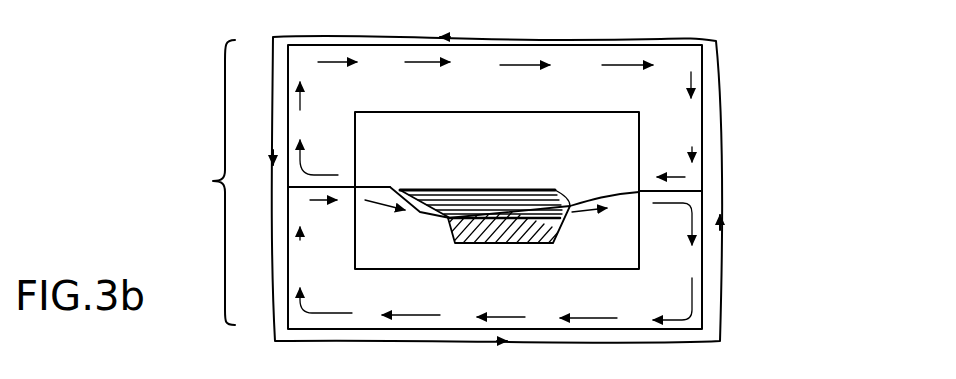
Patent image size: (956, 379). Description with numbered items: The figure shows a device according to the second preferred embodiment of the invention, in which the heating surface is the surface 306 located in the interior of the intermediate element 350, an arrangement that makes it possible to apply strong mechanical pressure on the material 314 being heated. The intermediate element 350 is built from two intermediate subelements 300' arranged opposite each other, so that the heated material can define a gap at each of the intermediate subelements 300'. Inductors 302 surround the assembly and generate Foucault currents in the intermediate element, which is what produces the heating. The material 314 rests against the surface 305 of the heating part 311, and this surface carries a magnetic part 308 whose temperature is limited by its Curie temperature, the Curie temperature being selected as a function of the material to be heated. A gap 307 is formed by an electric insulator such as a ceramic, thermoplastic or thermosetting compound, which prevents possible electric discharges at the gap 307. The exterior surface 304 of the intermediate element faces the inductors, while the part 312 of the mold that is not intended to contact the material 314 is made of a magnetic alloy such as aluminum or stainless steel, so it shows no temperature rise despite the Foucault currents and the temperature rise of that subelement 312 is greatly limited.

The intermediate subelement 300' is at (534, 178).
The inductor 302 is at (348, 9).
The exterior surface 304 is at (567, 42).
The surface of the heating part 305 is at (572, 205).
The heating surface 306 is at (388, 186).
The gap 307 is at (702, 190).
The magnetic part 308 is at (446, 236).
The heating part 311 is at (623, 261).
The part of the mold not in contact with the material 312 is at (703, 110).
The material to be heated 314 is at (495, 190).
The intermediate element 350 is at (442, 182).